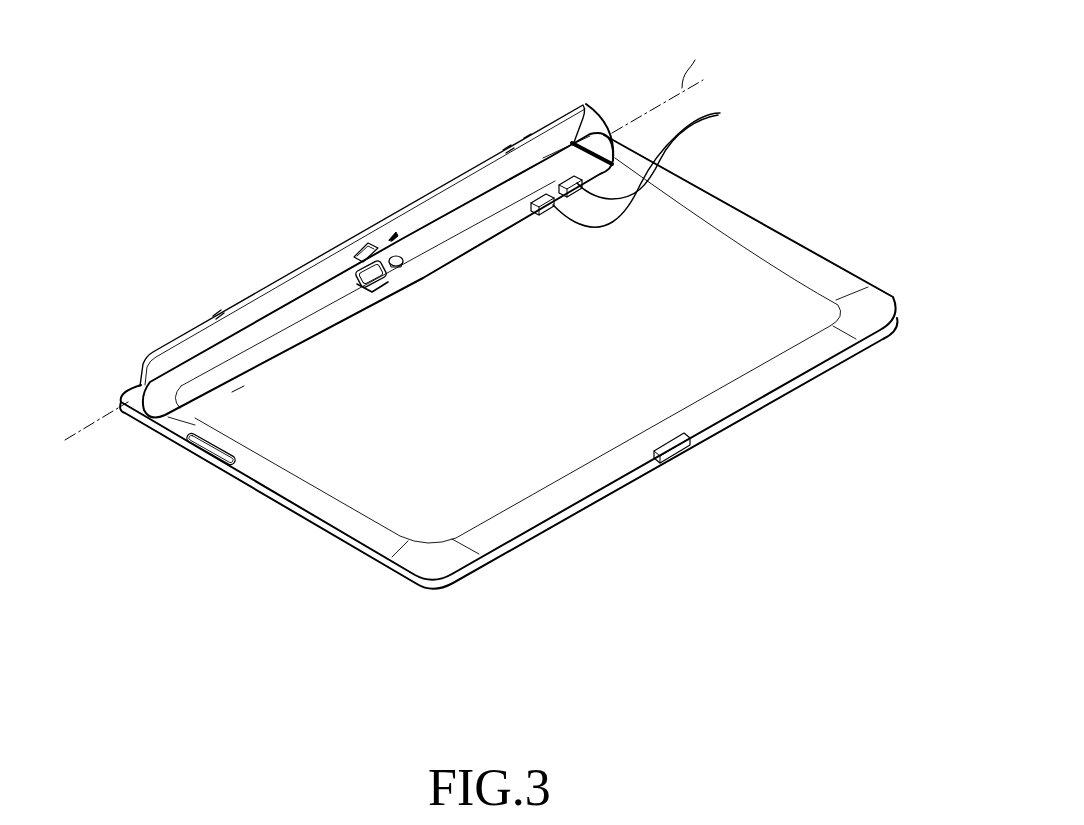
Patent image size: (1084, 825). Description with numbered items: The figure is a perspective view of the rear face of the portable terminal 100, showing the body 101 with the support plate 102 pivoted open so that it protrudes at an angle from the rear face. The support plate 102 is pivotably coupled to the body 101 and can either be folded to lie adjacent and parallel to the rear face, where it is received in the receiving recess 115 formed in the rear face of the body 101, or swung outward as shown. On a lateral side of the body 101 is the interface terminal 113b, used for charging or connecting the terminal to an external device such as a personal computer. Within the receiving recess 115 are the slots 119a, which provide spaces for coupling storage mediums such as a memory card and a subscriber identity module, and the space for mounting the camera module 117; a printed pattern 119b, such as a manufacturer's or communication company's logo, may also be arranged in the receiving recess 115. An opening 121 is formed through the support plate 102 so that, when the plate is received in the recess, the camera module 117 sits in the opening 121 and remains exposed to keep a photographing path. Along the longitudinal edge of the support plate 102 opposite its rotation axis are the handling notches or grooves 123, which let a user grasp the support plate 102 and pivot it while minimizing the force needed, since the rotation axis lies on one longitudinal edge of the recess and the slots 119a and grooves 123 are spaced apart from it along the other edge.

The portable terminal 100 is at (284, 108).
The body 101 is at (345, 555).
The support plate 102 is at (160, 338).
The interface terminal 113b is at (674, 451).
The receiving recess 115 is at (590, 163).
The camera module 117 is at (352, 272).
The slots 119a is at (720, 113).
The printed pattern 119b is at (237, 388).
The opening 121 is at (381, 243).
The handling notches or grooves 123 is at (506, 142).